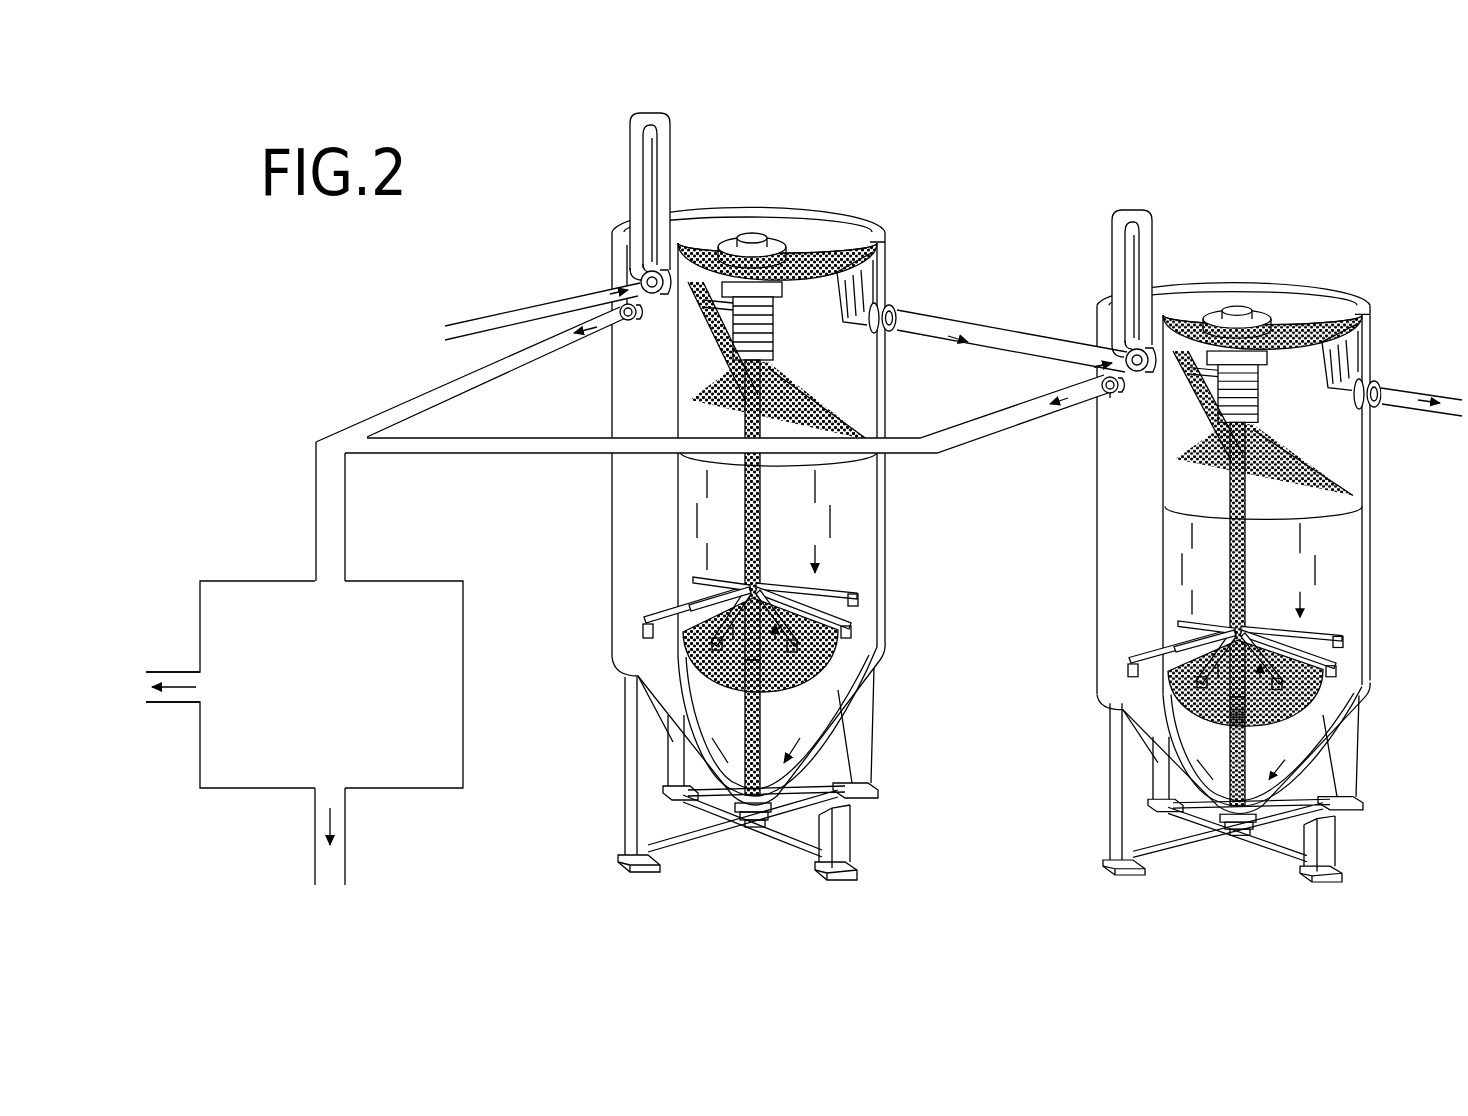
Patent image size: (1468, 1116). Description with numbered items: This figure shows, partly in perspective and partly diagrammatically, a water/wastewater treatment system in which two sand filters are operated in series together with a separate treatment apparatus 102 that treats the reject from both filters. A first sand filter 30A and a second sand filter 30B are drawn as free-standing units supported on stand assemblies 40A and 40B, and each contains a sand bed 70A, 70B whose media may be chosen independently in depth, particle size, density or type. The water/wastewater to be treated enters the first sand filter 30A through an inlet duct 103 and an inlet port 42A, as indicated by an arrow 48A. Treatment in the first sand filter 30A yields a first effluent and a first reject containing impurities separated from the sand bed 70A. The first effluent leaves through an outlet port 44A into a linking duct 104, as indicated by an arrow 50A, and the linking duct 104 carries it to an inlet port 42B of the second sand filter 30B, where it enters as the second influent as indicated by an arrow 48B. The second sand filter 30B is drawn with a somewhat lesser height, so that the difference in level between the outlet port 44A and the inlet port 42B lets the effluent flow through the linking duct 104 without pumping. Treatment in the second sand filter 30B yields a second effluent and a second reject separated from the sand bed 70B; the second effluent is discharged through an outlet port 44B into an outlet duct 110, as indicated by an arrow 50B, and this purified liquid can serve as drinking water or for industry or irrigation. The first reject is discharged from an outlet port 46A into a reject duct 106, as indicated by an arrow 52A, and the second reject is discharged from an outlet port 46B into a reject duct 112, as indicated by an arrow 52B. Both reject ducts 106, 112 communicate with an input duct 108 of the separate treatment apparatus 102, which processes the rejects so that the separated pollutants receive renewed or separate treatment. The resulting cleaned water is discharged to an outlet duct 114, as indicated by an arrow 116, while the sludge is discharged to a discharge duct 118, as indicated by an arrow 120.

The first sand filter 30A is at (801, 543).
The second sand filter 30B is at (1265, 582).
The stand assembly 40A is at (990, 727).
The stand assembly 40B is at (1365, 760).
The inlet port 42A is at (641, 275).
The inlet port 42B is at (1128, 350).
The outlet port 44A is at (893, 305).
The outlet port 44B is at (1378, 383).
The outlet port 46A is at (627, 321).
The outlet port 46B is at (1112, 396).
The arrow 48A is at (600, 297).
The arrow 48B is at (1095, 355).
The arrow 50A is at (930, 318).
The arrow 50B is at (1408, 400).
The arrow 52A is at (596, 340).
The arrow 52B is at (1104, 390).
The sand bed 70A is at (865, 570).
The sand bed 70B is at (1340, 585).
The separate treatment apparatus 102 is at (415, 790).
The inlet duct 103 is at (475, 320).
The linking duct 104 is at (1000, 363).
The reject duct 106 is at (400, 407).
The input duct 108 is at (346, 554).
The outlet duct 110 is at (1440, 400).
The reject duct 112 is at (938, 452).
The outlet duct 114 is at (158, 670).
The arrow 116 is at (178, 690).
The discharge duct 118 is at (317, 850).
The arrow 120 is at (325, 817).